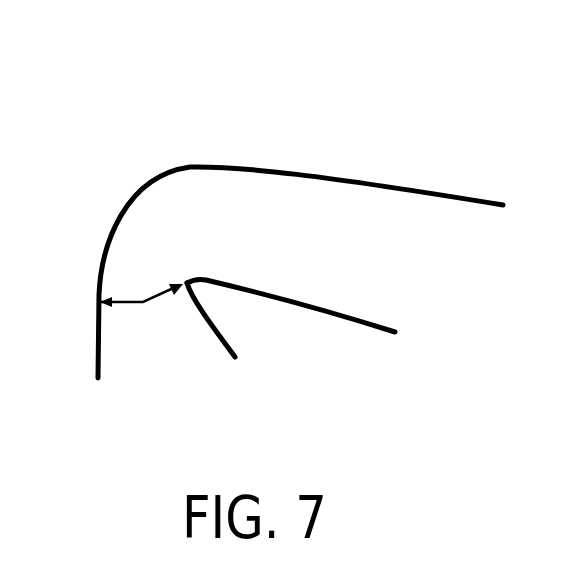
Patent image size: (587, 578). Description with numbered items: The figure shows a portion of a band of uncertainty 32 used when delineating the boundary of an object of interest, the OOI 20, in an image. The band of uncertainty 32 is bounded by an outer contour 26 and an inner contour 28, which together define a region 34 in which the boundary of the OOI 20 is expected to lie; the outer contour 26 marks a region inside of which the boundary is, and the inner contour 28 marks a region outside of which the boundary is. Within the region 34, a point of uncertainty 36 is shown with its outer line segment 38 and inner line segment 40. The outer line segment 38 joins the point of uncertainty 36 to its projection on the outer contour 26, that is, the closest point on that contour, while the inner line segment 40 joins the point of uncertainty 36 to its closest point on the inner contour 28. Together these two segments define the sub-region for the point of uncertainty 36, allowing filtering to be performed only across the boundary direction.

The OOI 20 is at (288, 340).
The outer contour 26 is at (357, 183).
The inner contour 28 is at (342, 315).
The band of uncertainty 32 is at (509, 94).
The region 34 is at (288, 257).
The point of uncertainty 36 is at (141, 300).
The outer line segment 38 is at (167, 292).
The inner line segment 40 is at (115, 302).